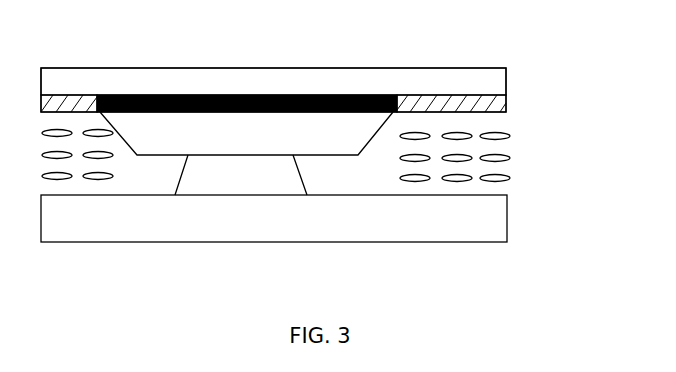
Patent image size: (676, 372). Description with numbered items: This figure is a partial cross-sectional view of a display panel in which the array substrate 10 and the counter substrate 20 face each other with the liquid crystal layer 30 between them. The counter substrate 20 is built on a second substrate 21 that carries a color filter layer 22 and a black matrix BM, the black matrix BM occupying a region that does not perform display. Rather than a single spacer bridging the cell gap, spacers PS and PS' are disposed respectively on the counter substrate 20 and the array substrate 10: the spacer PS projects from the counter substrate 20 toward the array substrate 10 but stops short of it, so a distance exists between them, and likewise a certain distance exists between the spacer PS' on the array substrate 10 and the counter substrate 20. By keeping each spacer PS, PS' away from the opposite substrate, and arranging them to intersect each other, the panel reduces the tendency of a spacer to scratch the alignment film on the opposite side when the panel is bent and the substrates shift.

The array substrate 10 is at (507, 232).
The counter substrate 20 is at (513, 72).
The second substrate 21 is at (478, 68).
The color filter layer 22 is at (436, 98).
The liquid crystal layer 30 is at (513, 154).
The black matrix BM is at (347, 95).
The spacer PS is at (246, 133).
The spacer PS' is at (241, 175).